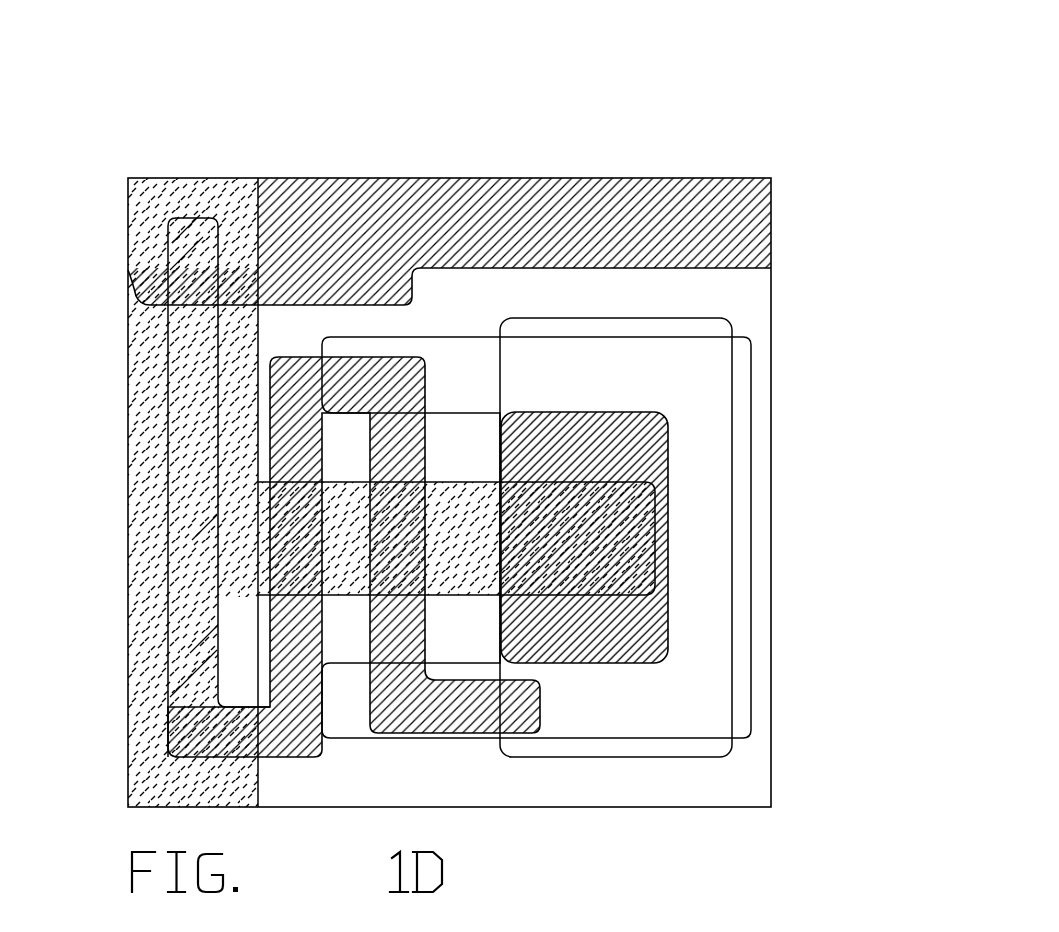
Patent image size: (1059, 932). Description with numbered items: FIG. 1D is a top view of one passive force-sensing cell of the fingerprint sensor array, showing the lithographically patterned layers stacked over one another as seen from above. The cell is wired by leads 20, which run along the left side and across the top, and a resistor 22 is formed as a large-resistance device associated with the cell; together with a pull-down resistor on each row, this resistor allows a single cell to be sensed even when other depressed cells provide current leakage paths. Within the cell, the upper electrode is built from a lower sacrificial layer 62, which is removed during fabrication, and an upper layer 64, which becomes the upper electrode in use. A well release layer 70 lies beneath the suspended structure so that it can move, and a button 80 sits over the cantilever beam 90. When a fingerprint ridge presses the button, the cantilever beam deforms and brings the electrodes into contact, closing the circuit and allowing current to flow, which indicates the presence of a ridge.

The leads 20 is at (540, 197).
The resistor 22 is at (292, 378).
The lower sacrificial layer 62 is at (692, 325).
The upper layer 64 is at (465, 531).
The well release layer 70 is at (453, 375).
The button 80 is at (590, 637).
The cantilever beam 90 is at (468, 450).